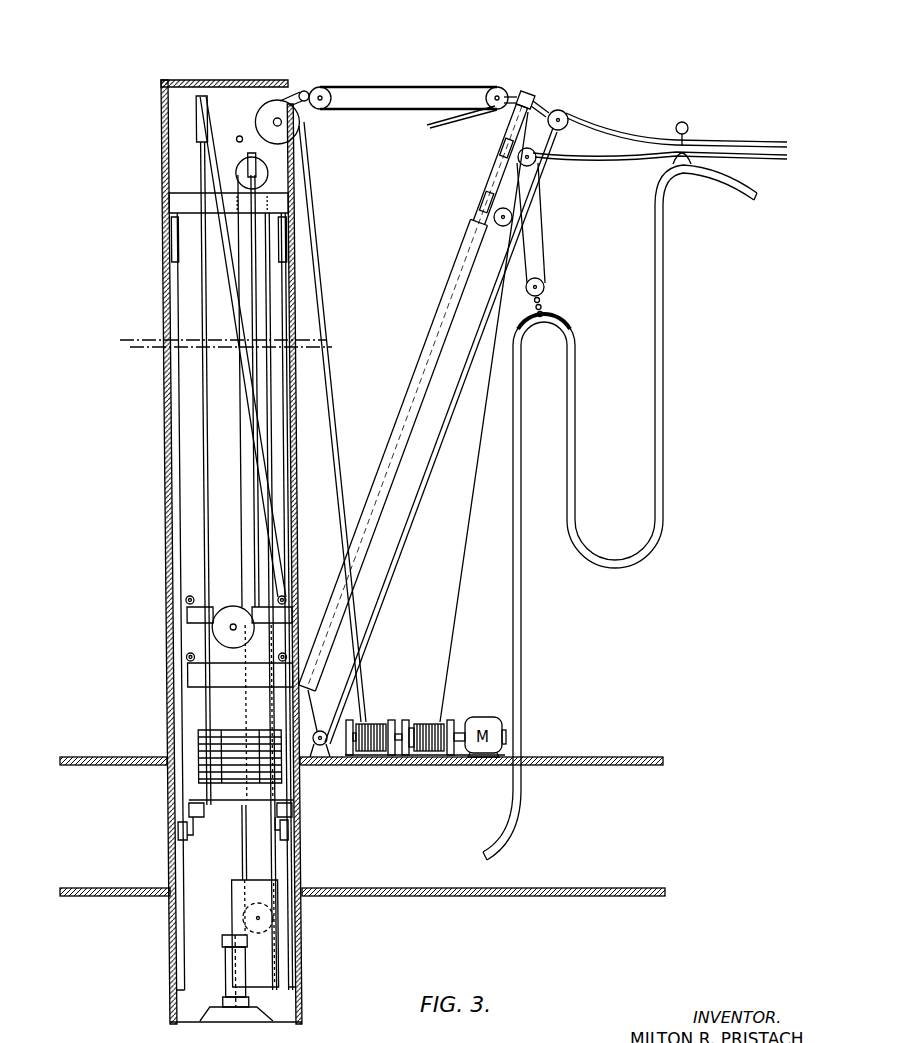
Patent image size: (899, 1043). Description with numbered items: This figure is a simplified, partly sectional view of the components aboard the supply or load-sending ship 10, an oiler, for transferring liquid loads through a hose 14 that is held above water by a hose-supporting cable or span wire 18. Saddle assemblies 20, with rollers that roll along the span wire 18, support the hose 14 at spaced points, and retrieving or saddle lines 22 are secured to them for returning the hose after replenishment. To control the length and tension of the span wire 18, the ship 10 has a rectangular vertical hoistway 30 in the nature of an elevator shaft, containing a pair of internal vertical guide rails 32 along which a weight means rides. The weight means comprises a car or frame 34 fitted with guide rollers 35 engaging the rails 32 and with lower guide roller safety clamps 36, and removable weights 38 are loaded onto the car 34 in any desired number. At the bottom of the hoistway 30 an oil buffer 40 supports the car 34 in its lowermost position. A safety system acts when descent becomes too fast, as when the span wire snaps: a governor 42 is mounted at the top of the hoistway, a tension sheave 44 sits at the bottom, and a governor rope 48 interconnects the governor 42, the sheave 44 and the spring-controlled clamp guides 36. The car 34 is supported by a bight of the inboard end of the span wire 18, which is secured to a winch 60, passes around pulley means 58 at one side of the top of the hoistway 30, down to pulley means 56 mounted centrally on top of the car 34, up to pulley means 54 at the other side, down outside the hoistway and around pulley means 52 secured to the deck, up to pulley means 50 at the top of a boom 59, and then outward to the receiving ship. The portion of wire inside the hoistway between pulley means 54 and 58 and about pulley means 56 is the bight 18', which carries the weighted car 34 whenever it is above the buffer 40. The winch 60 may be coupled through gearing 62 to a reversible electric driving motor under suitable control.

The supply or load-sending ship 10 is at (606, 738).
The hose 14 is at (664, 390).
The span wire 18 is at (676, 129).
The bight of the span wire 18' is at (230, 460).
The saddle assemblies 20 is at (689, 190).
The retrieving or saddle lines 22 is at (604, 158).
The hoistway 30 is at (219, 552).
The guide rails 32 is at (163, 428).
The car or frame 34 is at (186, 679).
The guide rollers 35 is at (184, 596).
The guide roller safety clamps 36 is at (188, 834).
The removable weights 38 is at (226, 735).
The oil buffer 40 is at (217, 968).
The governor 42 is at (243, 120).
The tension sheave 44 is at (250, 918).
The governor rope 48 is at (234, 851).
The pulley means 50 is at (566, 111).
The pulley means 52 is at (319, 731).
The pulley means 54 is at (196, 120).
The pulley means 56 is at (223, 606).
The pulley means 58 is at (299, 124).
The boom 59 is at (422, 352).
The winch 60 is at (378, 722).
The gearing 62 is at (418, 722).